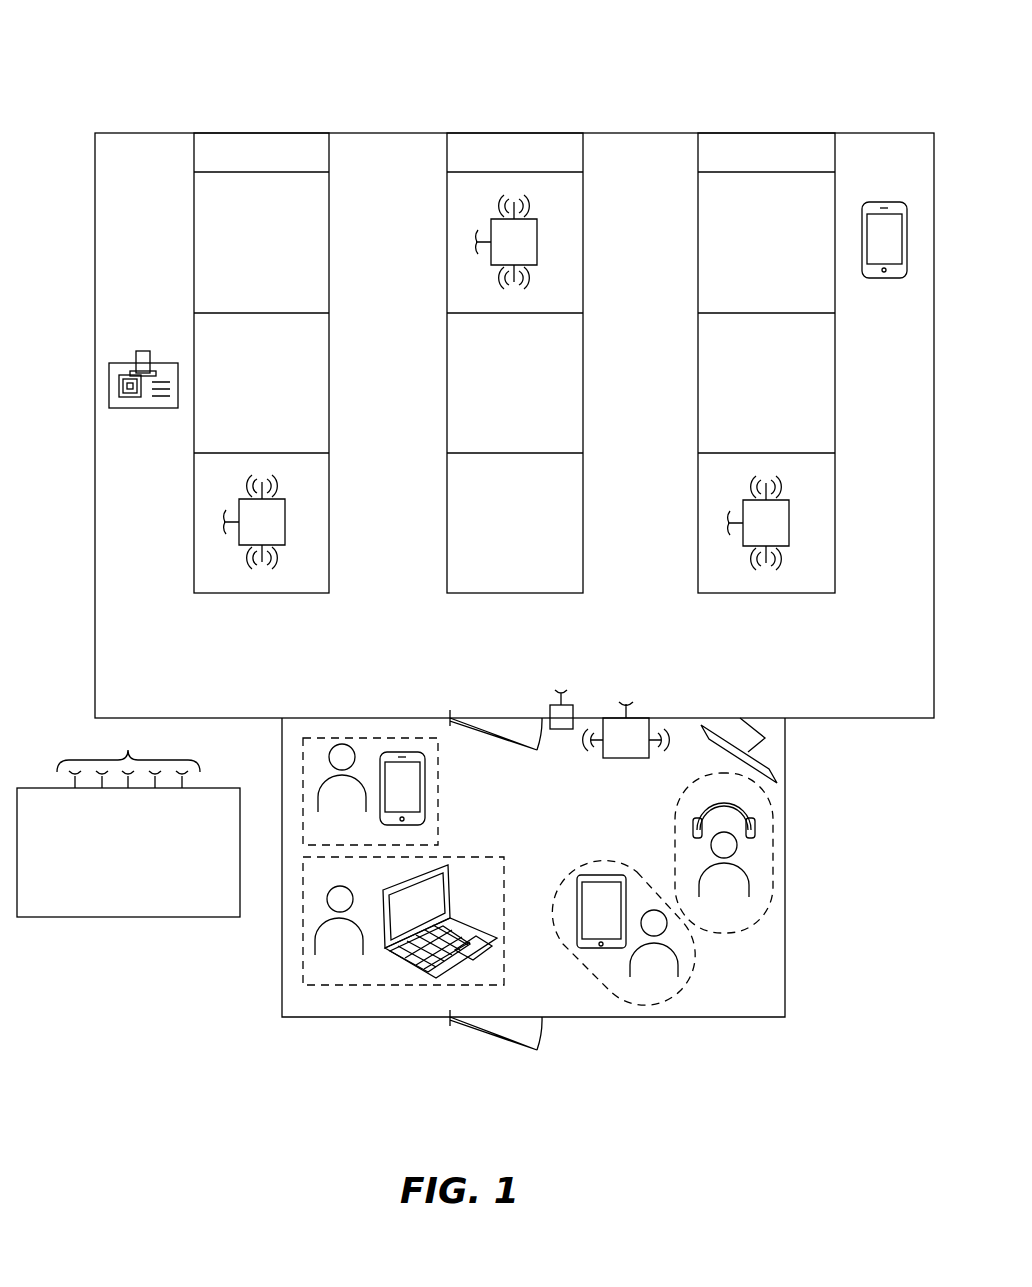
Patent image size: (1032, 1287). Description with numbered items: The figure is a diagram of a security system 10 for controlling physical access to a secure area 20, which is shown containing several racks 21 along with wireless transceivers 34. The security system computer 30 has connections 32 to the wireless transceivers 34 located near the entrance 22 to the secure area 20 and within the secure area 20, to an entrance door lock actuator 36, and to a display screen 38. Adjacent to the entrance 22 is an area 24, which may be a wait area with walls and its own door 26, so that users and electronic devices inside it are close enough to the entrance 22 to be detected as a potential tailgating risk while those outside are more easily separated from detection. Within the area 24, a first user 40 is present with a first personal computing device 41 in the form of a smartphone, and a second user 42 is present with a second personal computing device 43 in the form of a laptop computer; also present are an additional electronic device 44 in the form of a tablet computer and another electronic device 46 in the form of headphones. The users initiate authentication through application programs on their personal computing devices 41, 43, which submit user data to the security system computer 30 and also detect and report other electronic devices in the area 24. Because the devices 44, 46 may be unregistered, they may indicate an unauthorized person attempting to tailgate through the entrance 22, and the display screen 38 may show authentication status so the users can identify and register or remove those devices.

The security system 10 is at (150, 78).
The secure area 20 is at (519, 673).
The racks 21 is at (329, 245).
The entrance 22 is at (515, 742).
The area 24 is at (785, 970).
The door 26 is at (505, 1040).
The security system computer 30 is at (128, 917).
The connections 32 is at (128, 748).
The wireless transceivers 34 is at (514, 242).
The entrance door lock actuator 36 is at (565, 712).
The display screen 38 is at (758, 757).
The first user 40 is at (338, 791).
The first personal computing device 41 is at (425, 790).
The second user 42 is at (335, 938).
The second personal computing device 43 is at (410, 963).
The additional electronic device 44 is at (600, 950).
The electronic device 46 is at (752, 814).